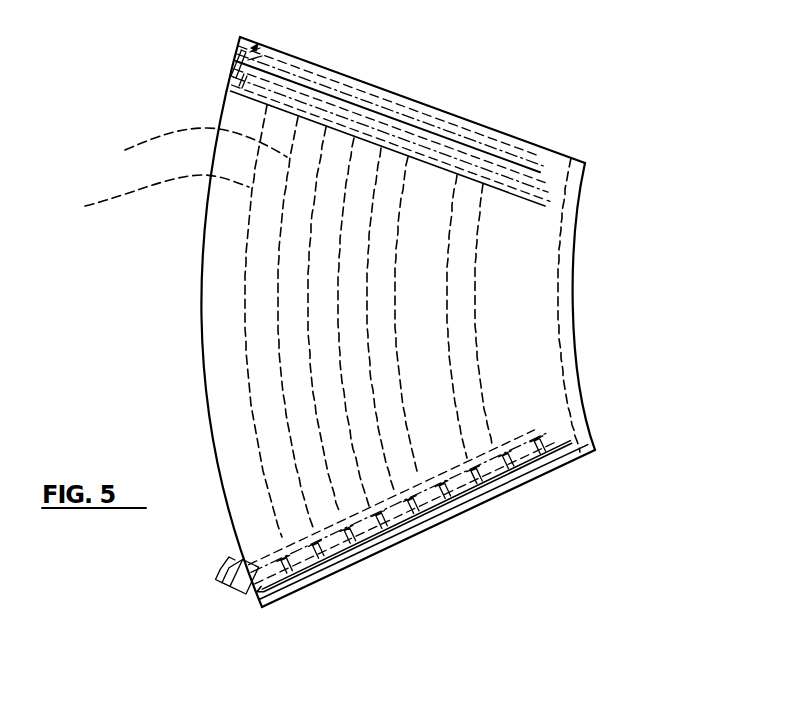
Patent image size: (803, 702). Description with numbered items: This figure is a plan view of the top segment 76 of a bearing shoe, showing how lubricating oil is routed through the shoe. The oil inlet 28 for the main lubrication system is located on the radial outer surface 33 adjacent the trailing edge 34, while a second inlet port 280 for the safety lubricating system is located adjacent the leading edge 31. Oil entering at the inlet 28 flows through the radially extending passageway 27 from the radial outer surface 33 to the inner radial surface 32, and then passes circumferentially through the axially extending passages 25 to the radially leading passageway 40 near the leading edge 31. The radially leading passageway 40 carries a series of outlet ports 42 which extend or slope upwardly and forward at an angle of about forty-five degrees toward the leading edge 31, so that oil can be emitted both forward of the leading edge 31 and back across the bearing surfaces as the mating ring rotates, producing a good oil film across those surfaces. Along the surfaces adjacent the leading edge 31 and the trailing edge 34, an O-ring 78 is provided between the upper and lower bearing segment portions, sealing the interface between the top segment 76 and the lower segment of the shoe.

The axially extending passages 25 is at (125, 150).
The radially extending passageway 27 is at (317, 106).
The oil inlet 28 is at (240, 70).
The leading edge 31 is at (530, 490).
The inner radial surface 32 is at (572, 273).
The radial outer surface 33 is at (203, 253).
The trailing edge 34 is at (503, 131).
The radially leading passageway 40 is at (547, 432).
The outlet ports 42 is at (595, 443).
The top segment 76 is at (650, 376).
The O-ring 78 is at (541, 157).
The inlet port 280 is at (232, 578).